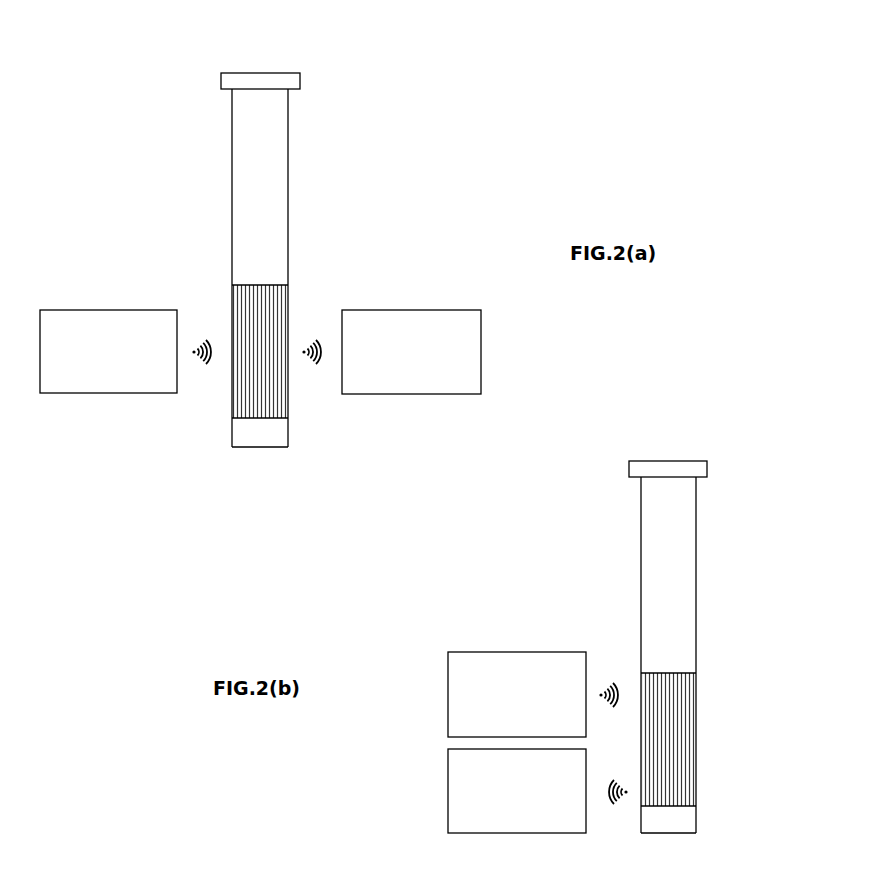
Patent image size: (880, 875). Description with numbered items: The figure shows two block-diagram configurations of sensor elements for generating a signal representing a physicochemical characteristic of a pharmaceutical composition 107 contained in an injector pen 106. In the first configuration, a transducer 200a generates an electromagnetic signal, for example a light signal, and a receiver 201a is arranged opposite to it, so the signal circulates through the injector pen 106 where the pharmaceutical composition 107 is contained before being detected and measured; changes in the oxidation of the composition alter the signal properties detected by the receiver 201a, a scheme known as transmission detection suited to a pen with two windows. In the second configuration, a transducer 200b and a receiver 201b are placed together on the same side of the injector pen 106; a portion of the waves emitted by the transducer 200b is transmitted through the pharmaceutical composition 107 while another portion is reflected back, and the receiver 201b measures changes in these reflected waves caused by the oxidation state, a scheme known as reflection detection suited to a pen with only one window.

In FIG. 2A, the injector pen 106 is at (272, 62).
In FIG. 2B, the injector pen 106 is at (681, 450).
In FIG. 2A, the pharmaceutical composition 107 is at (266, 307).
In FIG. 2B, the pharmaceutical composition 107 is at (675, 694).
In FIG. 2A, the transducer 200a is at (108, 351).
In FIG. 2A, the receiver 201a is at (411, 352).
In FIG. 2B, the transducer 200b is at (517, 694).
In FIG. 2B, the receiver 201b is at (517, 791).